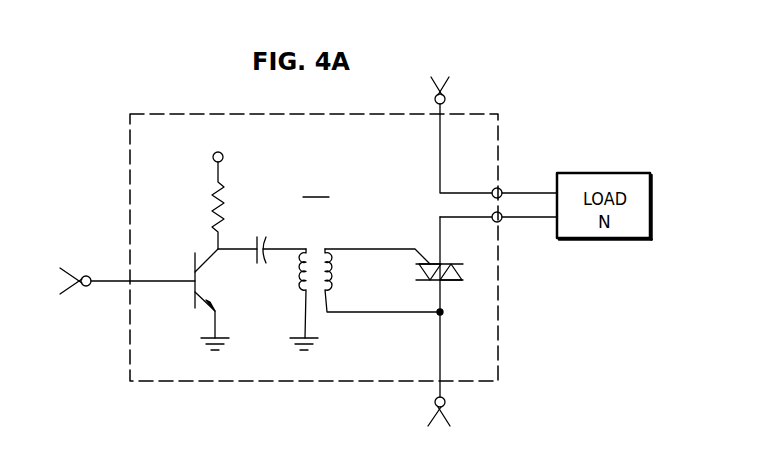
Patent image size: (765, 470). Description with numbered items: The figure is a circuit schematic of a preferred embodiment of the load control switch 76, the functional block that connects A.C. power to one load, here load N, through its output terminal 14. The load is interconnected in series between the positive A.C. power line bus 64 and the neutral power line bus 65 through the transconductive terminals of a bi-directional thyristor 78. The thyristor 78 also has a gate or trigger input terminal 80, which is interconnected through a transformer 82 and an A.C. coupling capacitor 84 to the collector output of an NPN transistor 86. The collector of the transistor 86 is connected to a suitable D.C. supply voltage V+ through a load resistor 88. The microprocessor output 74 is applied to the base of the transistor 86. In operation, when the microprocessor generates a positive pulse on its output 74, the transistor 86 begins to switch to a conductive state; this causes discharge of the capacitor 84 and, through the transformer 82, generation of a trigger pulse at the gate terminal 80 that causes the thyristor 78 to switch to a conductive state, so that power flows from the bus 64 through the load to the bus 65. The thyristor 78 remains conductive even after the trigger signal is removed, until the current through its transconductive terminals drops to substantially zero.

The output terminal 14 is at (502, 190).
The positive A.C. power line bus 64 is at (445, 102).
The neutral power line bus 65 is at (445, 388).
The output 74 is at (113, 280).
The load control switch 76 is at (500, 331).
The thyristor 78 is at (453, 269).
The gate or trigger input terminal 80 is at (424, 244).
The transformer 82 is at (321, 250).
The A.C. coupling capacitor 84 is at (257, 263).
The NPN transistor 86 is at (193, 289).
The load resistor 88 is at (213, 207).